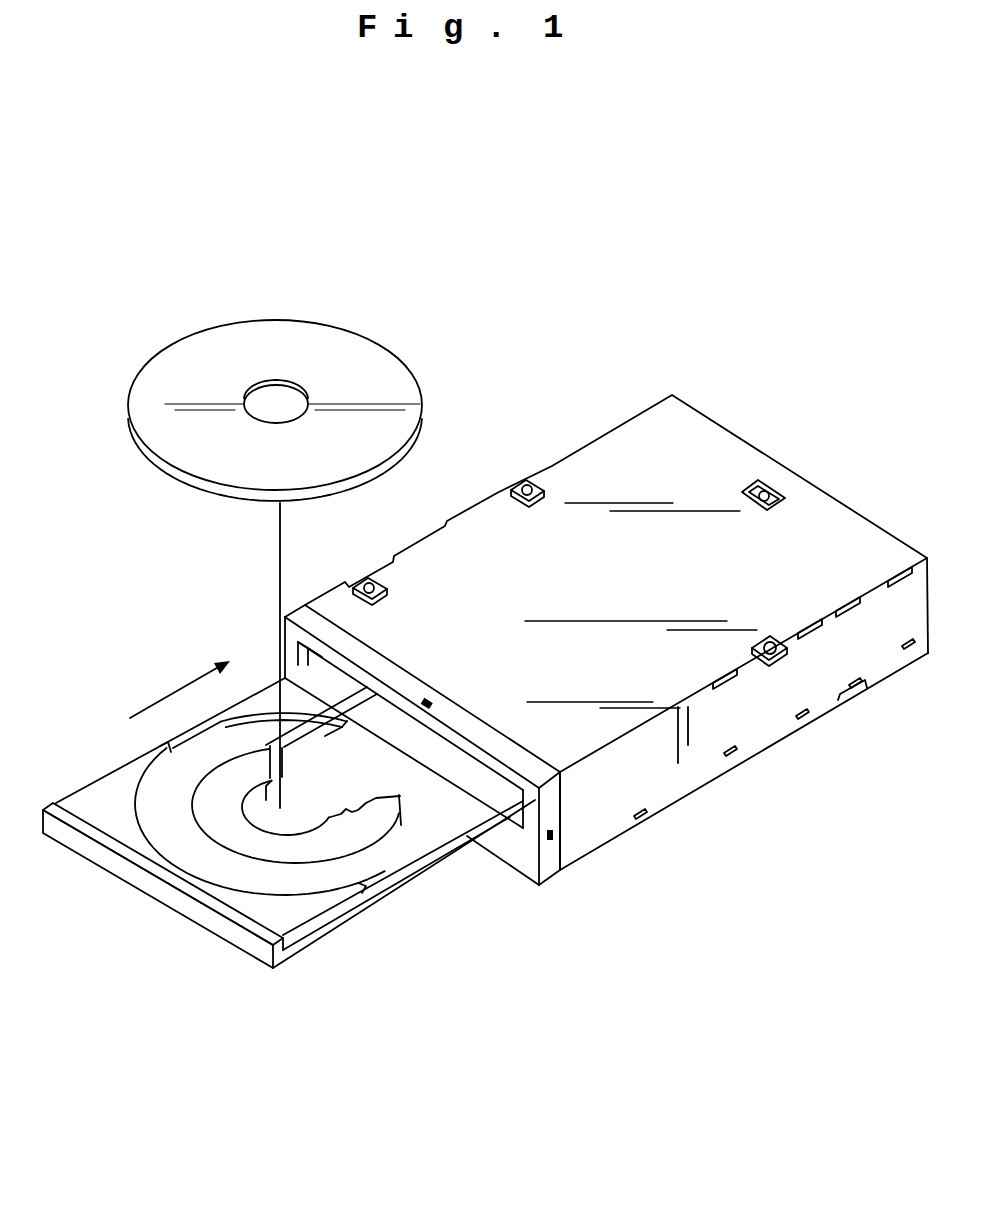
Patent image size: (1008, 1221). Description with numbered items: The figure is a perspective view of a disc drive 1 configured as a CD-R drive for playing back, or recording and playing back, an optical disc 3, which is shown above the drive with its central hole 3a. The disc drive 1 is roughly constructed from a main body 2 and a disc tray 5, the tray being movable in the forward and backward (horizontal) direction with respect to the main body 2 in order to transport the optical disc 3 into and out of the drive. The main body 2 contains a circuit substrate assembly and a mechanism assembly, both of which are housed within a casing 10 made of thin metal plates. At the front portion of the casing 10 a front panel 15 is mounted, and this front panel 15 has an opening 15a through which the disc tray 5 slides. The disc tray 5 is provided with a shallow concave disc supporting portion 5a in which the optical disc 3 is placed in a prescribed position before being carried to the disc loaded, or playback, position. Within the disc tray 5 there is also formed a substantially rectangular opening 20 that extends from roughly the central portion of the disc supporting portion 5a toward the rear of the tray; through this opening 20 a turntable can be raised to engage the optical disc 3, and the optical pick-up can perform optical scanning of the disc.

The disc drive 1 is at (256, 601).
The main body 2 is at (688, 400).
The optical disc 3 is at (150, 390).
The center hole of disc 3a is at (248, 398).
The disc tray 5 is at (248, 943).
The disc supporting portion 5a is at (420, 868).
The casing 10 is at (627, 498).
The front panel 15 is at (563, 878).
The opening 15a is at (500, 855).
The opening 20 is at (364, 812).